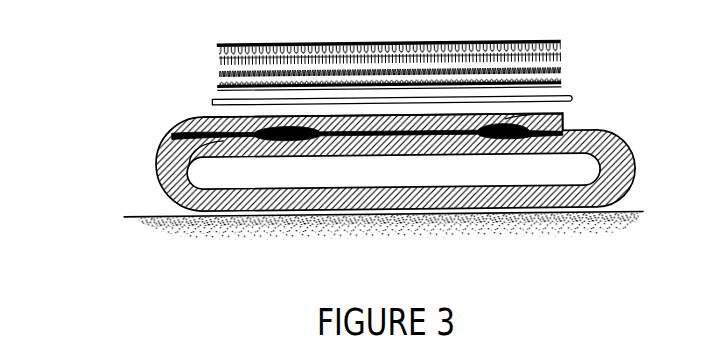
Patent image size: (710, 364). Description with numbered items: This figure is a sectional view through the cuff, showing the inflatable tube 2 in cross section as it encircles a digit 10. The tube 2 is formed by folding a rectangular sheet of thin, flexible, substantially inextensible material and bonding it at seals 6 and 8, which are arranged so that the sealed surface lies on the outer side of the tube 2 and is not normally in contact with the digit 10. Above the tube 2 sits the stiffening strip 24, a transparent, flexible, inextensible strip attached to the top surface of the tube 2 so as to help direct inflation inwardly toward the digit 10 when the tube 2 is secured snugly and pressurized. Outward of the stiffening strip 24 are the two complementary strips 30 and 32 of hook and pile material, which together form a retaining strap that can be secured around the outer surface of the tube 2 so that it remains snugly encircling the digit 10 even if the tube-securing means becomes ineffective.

The inflatable tube 2 is at (635, 160).
The seal 6 is at (213, 124).
The seal 8 is at (563, 124).
The digit 10 is at (638, 214).
The stiffening strip 24 is at (207, 175).
The strip of hook and pile material 30 is at (216, 54).
The strip of hook and pile material 32 is at (218, 78).